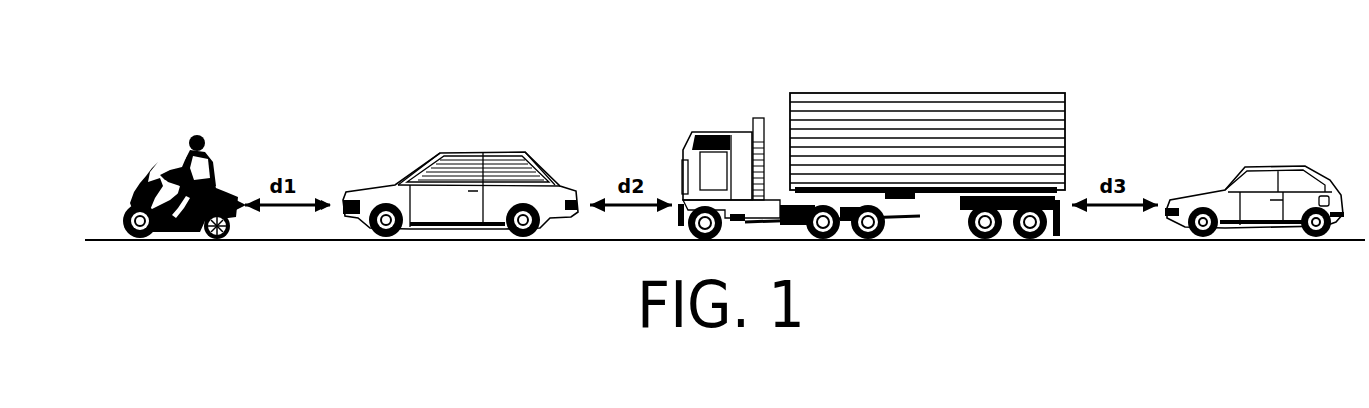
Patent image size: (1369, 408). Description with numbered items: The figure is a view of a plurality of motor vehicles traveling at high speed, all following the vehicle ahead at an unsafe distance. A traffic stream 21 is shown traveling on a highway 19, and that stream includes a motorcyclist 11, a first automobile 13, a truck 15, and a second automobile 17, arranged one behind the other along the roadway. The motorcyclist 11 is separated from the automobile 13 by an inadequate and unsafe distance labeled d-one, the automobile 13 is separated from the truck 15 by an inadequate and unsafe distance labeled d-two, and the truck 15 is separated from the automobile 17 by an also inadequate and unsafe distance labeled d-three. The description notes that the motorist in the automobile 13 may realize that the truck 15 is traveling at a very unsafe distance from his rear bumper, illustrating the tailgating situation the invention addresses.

The motorcyclist 11 is at (238, 155).
The automobile 13 is at (488, 148).
The traffic stream 21 is at (724, 128).
The truck 15 is at (937, 90).
The automobile 17 is at (1278, 160).
The highway 19 is at (807, 248).